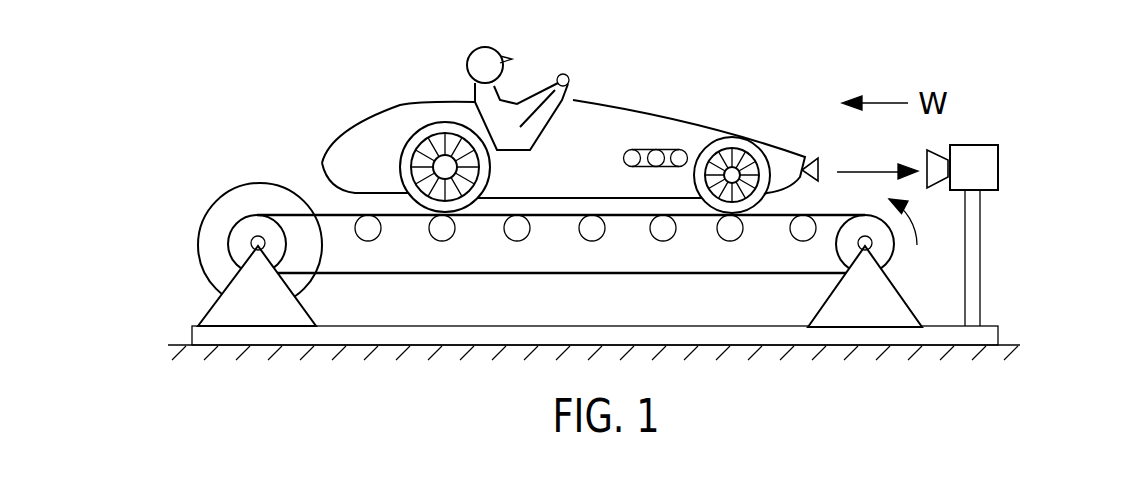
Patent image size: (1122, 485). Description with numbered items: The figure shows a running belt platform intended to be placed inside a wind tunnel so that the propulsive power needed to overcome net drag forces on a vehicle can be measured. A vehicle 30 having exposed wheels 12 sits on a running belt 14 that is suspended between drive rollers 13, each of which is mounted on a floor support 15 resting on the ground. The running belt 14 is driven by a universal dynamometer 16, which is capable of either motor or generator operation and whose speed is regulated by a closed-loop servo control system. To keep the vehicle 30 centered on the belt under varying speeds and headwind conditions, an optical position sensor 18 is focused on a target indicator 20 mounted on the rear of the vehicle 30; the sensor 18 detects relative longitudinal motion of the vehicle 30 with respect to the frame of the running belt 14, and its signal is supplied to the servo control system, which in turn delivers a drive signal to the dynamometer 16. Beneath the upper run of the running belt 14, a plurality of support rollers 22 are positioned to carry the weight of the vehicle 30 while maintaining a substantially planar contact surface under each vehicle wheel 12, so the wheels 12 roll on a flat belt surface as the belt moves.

The exposed wheels 12 is at (408, 162).
The drive rollers 13 is at (242, 238).
The running belt 14 is at (407, 213).
The floor supports 15 is at (240, 308).
The universal dynamometer 16 is at (216, 245).
The optical position sensor 18 is at (968, 150).
The target indicator 20 is at (815, 158).
The support rollers 22 is at (317, 223).
The vehicle 30 is at (607, 127).